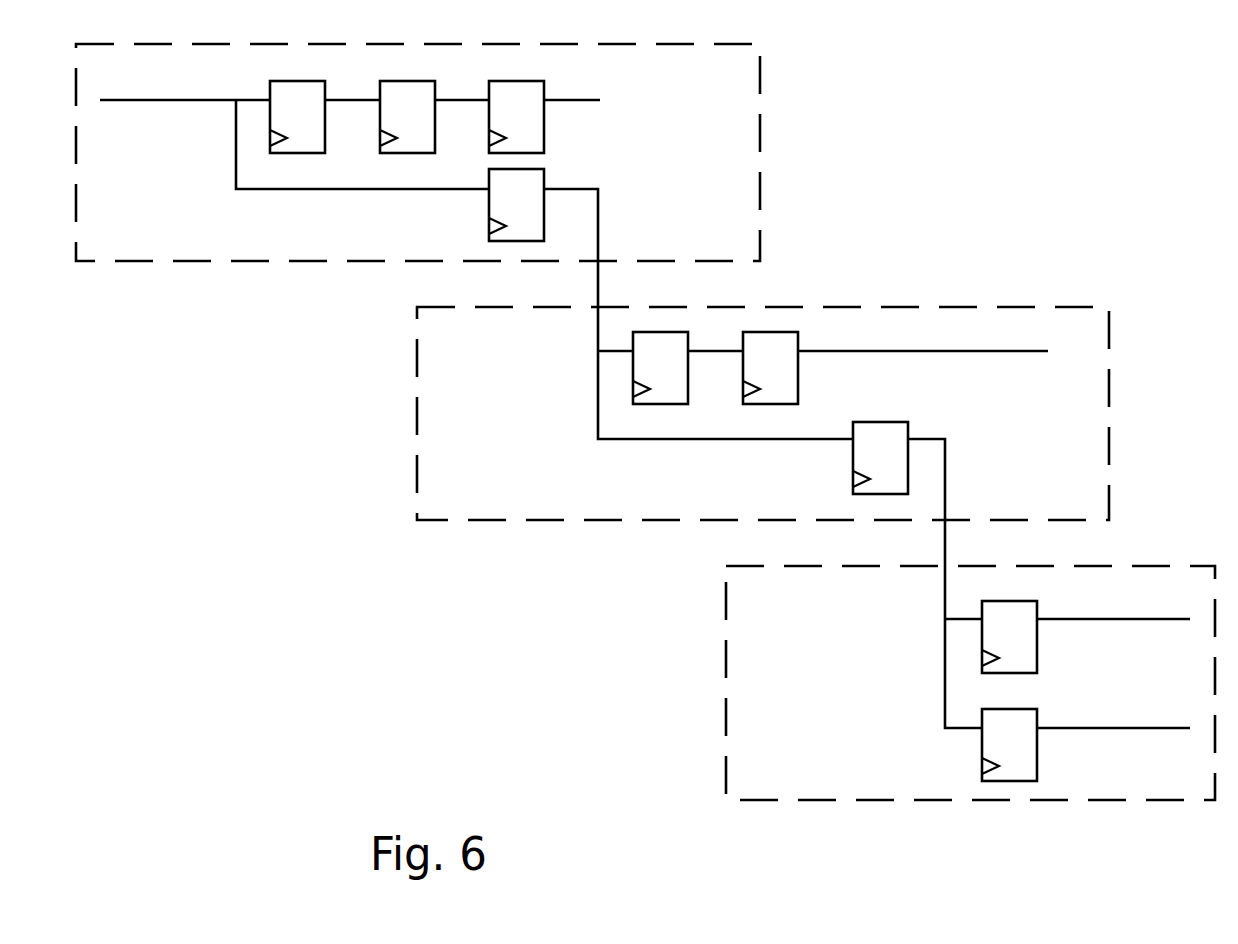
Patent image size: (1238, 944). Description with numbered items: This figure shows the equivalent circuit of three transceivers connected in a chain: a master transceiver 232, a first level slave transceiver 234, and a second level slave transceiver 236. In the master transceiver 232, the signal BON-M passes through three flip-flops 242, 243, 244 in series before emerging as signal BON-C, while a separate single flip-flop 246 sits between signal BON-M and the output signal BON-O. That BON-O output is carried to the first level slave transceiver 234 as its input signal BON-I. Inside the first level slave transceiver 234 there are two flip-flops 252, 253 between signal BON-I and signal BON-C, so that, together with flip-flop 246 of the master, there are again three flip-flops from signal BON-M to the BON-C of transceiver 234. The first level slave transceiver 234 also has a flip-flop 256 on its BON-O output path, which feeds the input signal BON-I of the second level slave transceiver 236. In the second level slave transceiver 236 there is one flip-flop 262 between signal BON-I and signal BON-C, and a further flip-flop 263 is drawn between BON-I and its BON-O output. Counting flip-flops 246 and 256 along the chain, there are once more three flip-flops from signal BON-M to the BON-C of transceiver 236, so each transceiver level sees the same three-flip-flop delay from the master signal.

The master transceiver 232 is at (148, 262).
The first level slave transceiver 234 is at (417, 424).
The second level slave transceiver 236 is at (726, 684).
The flip-flop 242 is at (276, 115).
The flip-flop 243 is at (386, 115).
The flip-flop 244 is at (495, 115).
The flip-flop 246 is at (495, 203).
The flip-flop 252 is at (639, 366).
The flip-flop 253 is at (749, 366).
The flip-flop 256 is at (859, 456).
The flip-flop 262 is at (988, 635).
The slave 2 output flip-flop 263 is at (988, 743).